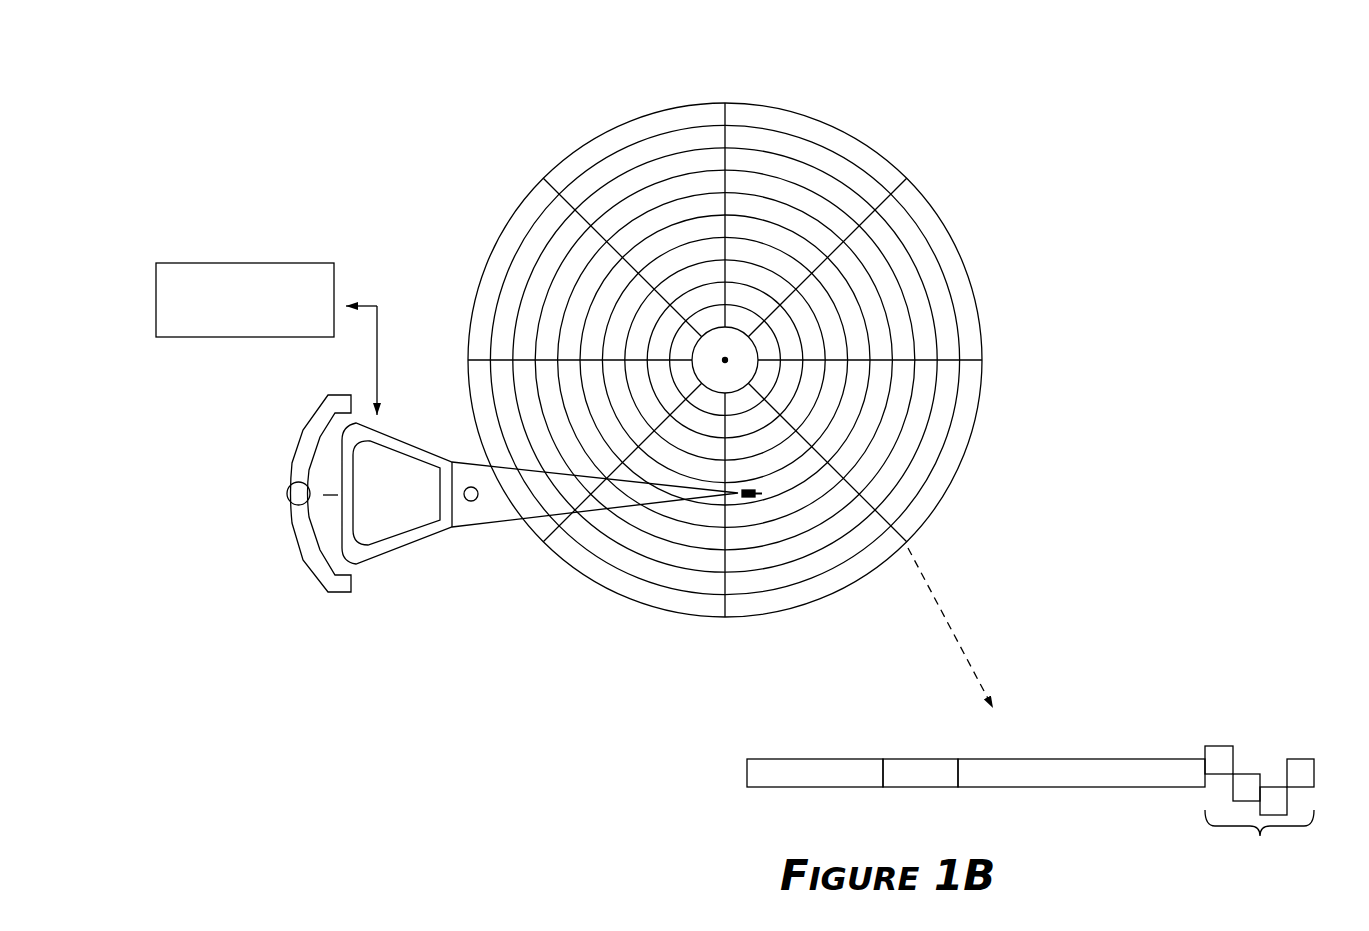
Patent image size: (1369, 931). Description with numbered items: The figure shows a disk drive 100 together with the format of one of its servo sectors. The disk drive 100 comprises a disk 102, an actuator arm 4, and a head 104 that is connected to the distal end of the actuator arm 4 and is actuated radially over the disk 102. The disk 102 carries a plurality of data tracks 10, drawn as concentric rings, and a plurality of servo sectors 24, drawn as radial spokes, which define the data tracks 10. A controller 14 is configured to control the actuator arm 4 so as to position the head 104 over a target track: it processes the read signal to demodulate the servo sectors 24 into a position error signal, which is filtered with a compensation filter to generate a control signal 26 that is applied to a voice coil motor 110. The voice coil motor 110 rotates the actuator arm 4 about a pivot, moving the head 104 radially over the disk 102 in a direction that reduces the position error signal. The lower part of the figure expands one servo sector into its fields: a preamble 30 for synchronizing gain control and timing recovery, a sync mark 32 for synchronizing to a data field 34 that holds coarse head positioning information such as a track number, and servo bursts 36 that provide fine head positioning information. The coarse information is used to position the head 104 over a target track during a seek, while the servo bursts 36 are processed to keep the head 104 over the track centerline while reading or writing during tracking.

In FIG. 1A, the disk drive 100 is at (245, 138).
In FIG. 1A, the disk 102 is at (498, 163).
In FIG. 1A, the data tracks 10 is at (905, 272).
In FIG. 1A, the servo sectors 24 is at (725, 103).
In FIG. 1A, the controller 14 is at (273, 262).
In FIG. 1A, the control signal 26 is at (376, 362).
In FIG. 1A, the voice coil motor 110 is at (388, 557).
In FIG. 1A, the actuator arm 4 is at (464, 528).
In FIG. 1A, the head 104 is at (757, 478).
In FIG. 1B, the preamble 30 is at (804, 788).
In FIG. 1B, the sync mark 32 is at (913, 788).
In FIG. 1B, the data field 34 is at (1078, 788).
In FIG. 1B, the servo bursts 36 is at (1276, 734).